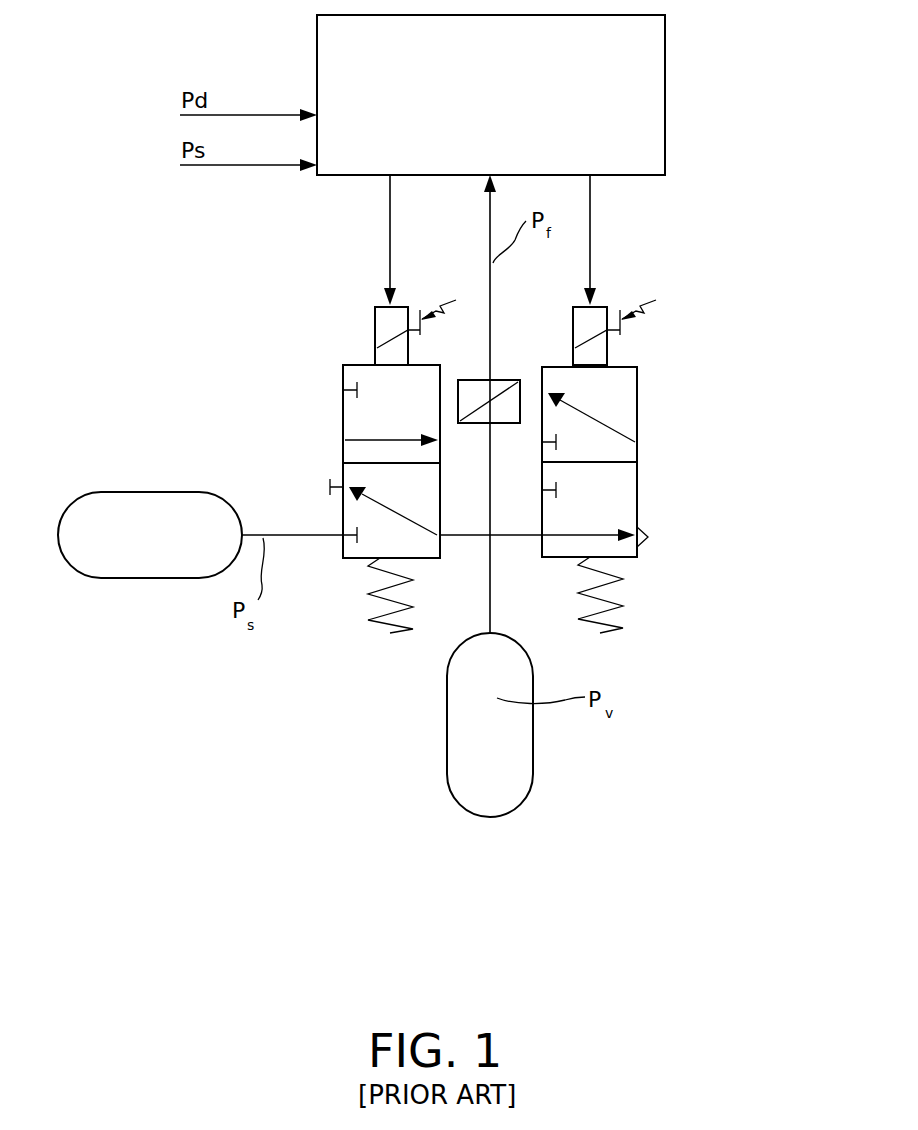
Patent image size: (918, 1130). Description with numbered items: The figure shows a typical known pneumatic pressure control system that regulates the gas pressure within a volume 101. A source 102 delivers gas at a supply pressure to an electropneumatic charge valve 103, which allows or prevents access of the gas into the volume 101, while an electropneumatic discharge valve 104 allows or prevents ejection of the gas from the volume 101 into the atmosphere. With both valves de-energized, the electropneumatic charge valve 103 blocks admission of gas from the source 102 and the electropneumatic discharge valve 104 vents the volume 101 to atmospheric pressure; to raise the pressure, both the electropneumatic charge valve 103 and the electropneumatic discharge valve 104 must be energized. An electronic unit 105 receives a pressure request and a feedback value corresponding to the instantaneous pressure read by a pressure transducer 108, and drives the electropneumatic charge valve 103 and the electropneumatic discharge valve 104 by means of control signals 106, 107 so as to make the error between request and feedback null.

The volume 101 is at (515, 772).
The source 102 is at (100, 558).
The electropneumatic charge valve 103 is at (342, 422).
The electropneumatic discharge valve 104 is at (695, 362).
The electronic unit 105 is at (652, 110).
The control signal 106 is at (390, 232).
The control signal 107 is at (592, 253).
The pressure transducer 108 is at (508, 380).